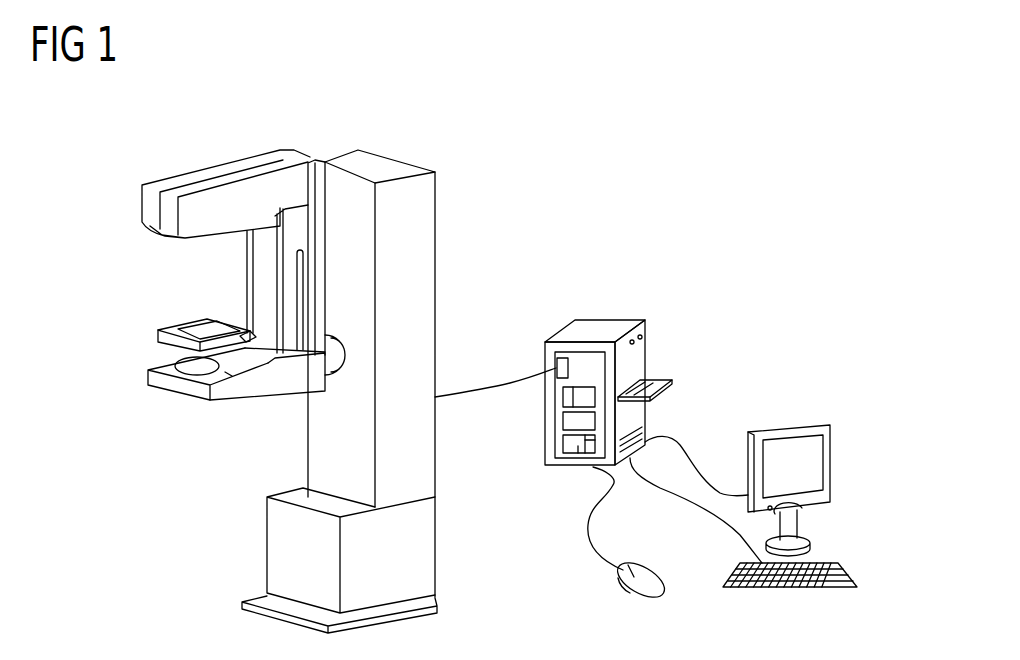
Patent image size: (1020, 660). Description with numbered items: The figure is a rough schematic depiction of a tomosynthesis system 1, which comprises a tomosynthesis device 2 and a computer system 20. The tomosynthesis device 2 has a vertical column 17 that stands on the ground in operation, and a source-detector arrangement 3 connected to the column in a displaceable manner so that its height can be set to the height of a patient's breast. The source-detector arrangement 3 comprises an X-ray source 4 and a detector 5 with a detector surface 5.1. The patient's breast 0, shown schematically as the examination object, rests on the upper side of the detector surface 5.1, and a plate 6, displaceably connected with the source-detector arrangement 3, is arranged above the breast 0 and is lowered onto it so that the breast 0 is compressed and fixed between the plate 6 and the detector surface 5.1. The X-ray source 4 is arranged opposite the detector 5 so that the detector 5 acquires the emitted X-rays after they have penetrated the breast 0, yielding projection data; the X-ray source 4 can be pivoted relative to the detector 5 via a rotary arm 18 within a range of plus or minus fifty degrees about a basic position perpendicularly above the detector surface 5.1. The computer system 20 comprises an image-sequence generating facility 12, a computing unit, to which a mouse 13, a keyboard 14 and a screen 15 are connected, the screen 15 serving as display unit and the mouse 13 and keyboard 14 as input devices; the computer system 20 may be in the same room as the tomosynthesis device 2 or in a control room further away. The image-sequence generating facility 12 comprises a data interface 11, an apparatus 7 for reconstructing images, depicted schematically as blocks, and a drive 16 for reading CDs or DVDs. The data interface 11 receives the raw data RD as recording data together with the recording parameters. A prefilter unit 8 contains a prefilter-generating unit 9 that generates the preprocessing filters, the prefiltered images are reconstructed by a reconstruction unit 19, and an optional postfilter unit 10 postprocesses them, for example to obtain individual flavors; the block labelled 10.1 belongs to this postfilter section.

The tomosynthesis system 1 is at (640, 139).
The tomosynthesis device 2 is at (408, 130).
The source-detector arrangement 3 is at (66, 185).
The X-ray source 4 is at (140, 239).
The detector 5 is at (162, 388).
The detector surface 5.1 is at (227, 373).
The plate 6 is at (192, 330).
The breast 0 is at (173, 363).
The apparatus 7 is at (553, 450).
The prefilter unit 8 is at (585, 387).
The prefilter-generating unit 9 is at (563, 397).
The postfilter unit 10 is at (578, 449).
The data interface 10.1 is at (593, 445).
The data interface 11 is at (557, 364).
The image-sequence generating facility 12 is at (597, 330).
The mouse 13 is at (652, 580).
The keyboard 14 is at (838, 563).
The screen 15 is at (827, 462).
The drive 16 is at (650, 378).
The vertical column 17 is at (425, 222).
The rotary arm 18 is at (323, 162).
The reconstruction unit 19 is at (562, 422).
The computer system 20 is at (717, 262).
The raw data RD is at (460, 385).